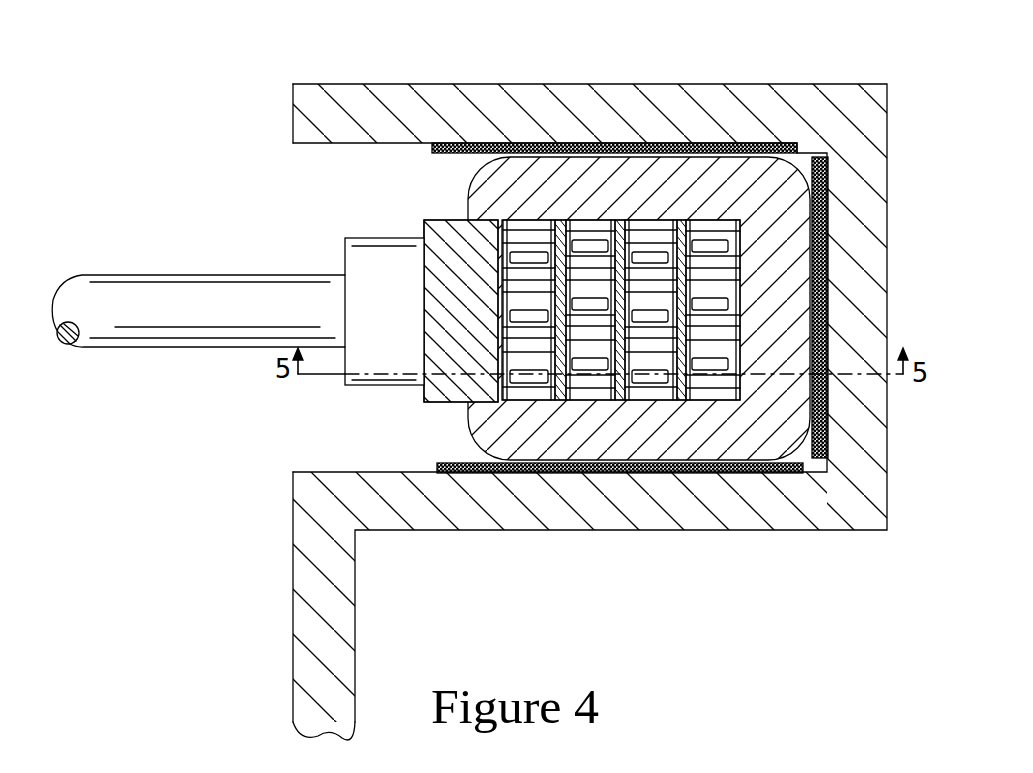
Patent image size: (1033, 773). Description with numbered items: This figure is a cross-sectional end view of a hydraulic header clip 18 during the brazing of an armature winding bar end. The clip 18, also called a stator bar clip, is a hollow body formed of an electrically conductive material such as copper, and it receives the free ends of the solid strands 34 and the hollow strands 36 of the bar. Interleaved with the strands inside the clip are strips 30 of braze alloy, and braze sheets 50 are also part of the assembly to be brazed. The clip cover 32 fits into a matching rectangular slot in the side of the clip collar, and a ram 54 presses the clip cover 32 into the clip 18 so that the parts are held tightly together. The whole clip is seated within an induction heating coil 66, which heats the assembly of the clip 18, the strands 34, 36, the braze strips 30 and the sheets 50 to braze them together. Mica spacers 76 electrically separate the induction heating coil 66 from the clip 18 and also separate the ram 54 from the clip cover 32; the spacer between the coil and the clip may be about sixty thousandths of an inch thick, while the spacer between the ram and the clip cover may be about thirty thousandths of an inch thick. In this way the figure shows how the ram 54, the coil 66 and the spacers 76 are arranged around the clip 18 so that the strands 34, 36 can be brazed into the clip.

The induction heating coil 66 is at (286, 108).
The hydraulic header clip 18 is at (765, 177).
The mica spacers 76 is at (435, 152).
The clip cover 32 is at (448, 296).
The braze alloy strips 30 is at (658, 299).
The braze sheets 50 is at (505, 394).
The solid strands 34 is at (660, 348).
The hollow strands 36 is at (715, 243).
The ram 54 is at (107, 268).